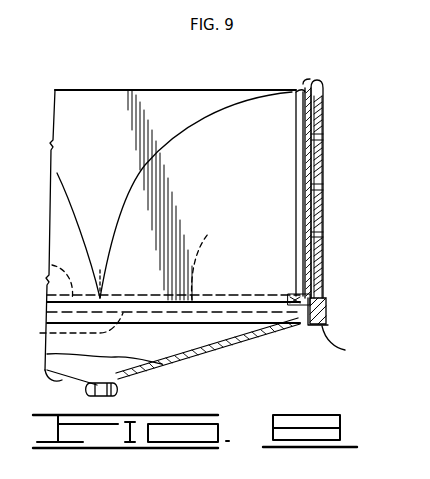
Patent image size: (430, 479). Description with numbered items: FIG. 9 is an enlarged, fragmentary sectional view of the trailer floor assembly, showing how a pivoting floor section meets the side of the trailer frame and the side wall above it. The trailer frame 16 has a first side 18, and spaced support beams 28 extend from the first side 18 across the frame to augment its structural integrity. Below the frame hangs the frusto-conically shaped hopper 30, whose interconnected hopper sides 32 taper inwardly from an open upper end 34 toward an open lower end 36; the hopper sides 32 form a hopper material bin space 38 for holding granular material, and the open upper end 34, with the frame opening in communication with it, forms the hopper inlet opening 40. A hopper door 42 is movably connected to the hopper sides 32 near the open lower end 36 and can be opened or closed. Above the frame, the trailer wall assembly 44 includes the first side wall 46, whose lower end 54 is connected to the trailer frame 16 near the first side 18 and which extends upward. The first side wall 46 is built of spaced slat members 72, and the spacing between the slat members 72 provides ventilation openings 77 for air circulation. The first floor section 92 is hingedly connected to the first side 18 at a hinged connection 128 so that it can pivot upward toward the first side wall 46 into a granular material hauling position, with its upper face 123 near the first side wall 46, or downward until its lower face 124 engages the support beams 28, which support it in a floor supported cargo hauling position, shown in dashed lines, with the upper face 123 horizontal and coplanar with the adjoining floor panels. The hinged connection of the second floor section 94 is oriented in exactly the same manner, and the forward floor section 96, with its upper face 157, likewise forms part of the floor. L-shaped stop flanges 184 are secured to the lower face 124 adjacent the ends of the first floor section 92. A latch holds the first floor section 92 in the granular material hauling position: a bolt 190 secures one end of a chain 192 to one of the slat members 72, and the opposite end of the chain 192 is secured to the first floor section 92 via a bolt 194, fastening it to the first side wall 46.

The trailer frame 16 is at (340, 346).
The first side 18 is at (328, 322).
The support beams 28 is at (64, 331).
The hopper 30 is at (222, 349).
The hopper sides 32 is at (62, 374).
The open upper end 34 is at (287, 311).
The open lower end 36 is at (117, 373).
The hopper material bin space 38 is at (193, 340).
The hopper inlet opening 40 is at (304, 317).
The hopper door 42 is at (88, 392).
The trailer wall assembly 44 is at (326, 130).
The first side wall 46 is at (327, 180).
The lower end 54 is at (330, 298).
The slat members 72 is at (322, 158).
The ventilation openings 77 is at (324, 200).
The first floor section 92 is at (307, 108).
The second floor section 94 is at (52, 268).
The forward floor section 96 is at (148, 96).
The upper face 123 is at (313, 122).
The lower face 124 is at (303, 128).
The hinged connection 128 is at (328, 305).
The upper face 157 is at (75, 95).
The L-shaped stop flanges 184 is at (297, 146).
The bolt 190 is at (324, 94).
The chain 192 is at (304, 86).
The bolt 194 is at (296, 92).